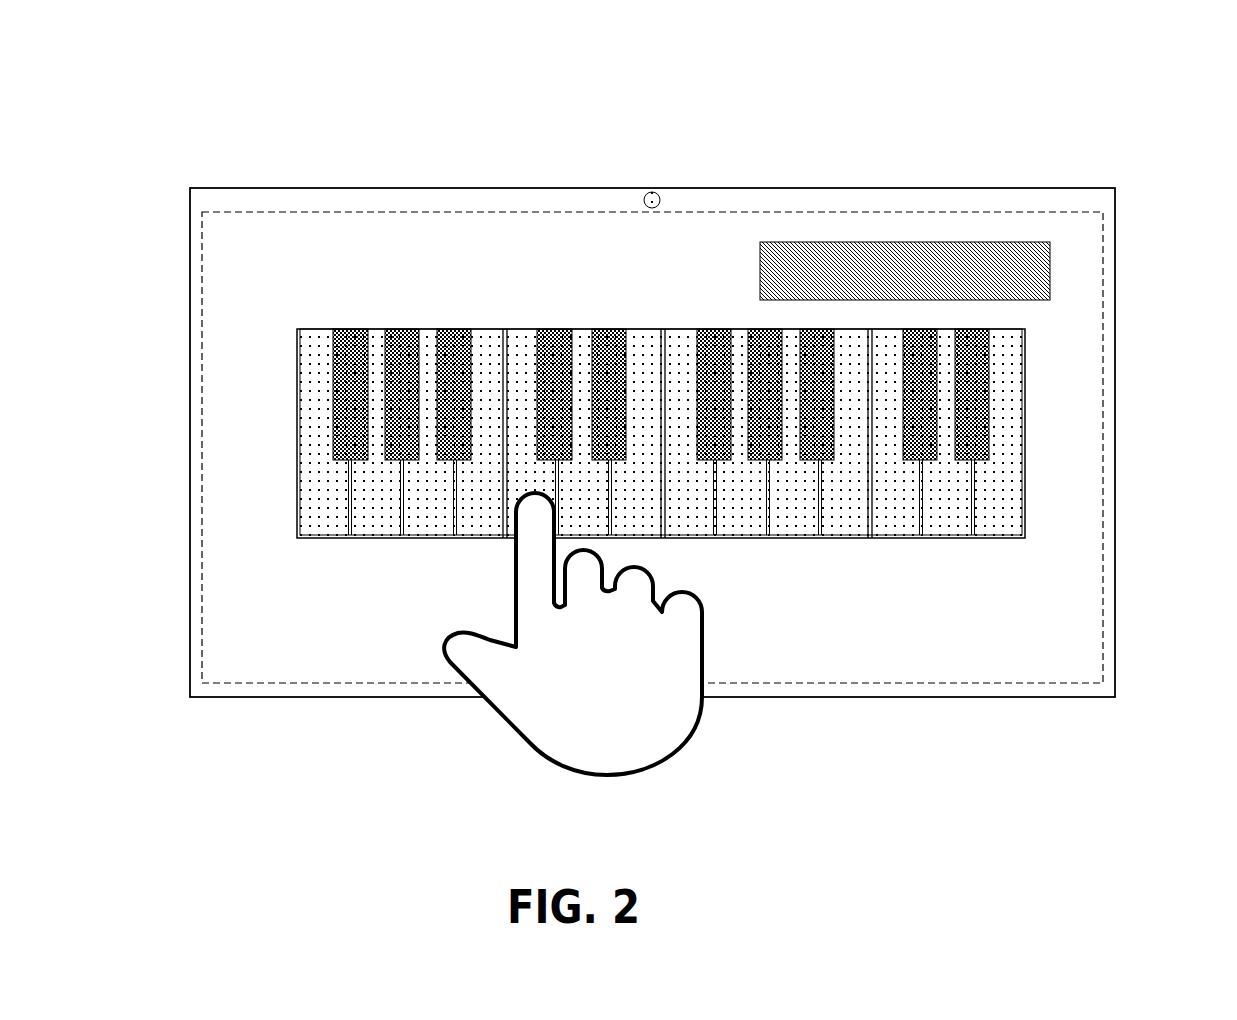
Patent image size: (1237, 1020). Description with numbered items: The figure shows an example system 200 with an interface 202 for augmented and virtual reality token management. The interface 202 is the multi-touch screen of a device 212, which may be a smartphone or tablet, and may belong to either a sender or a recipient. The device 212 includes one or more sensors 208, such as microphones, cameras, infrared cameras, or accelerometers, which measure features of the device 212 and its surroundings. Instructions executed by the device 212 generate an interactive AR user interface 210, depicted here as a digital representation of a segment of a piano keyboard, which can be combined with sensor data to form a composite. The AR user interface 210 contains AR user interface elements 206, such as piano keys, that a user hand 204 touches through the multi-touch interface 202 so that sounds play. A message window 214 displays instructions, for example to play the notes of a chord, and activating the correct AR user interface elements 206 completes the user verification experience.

The user interface of computing device 200 is at (1092, 70).
The interface 202 is at (1105, 450).
The user hand / finger 204 is at (618, 668).
The AR user interface elements 206 is at (735, 340).
The sensors 208 is at (660, 202).
The AR user interface 210 is at (296, 415).
The device 212 is at (188, 352).
The message window 214 is at (895, 243).